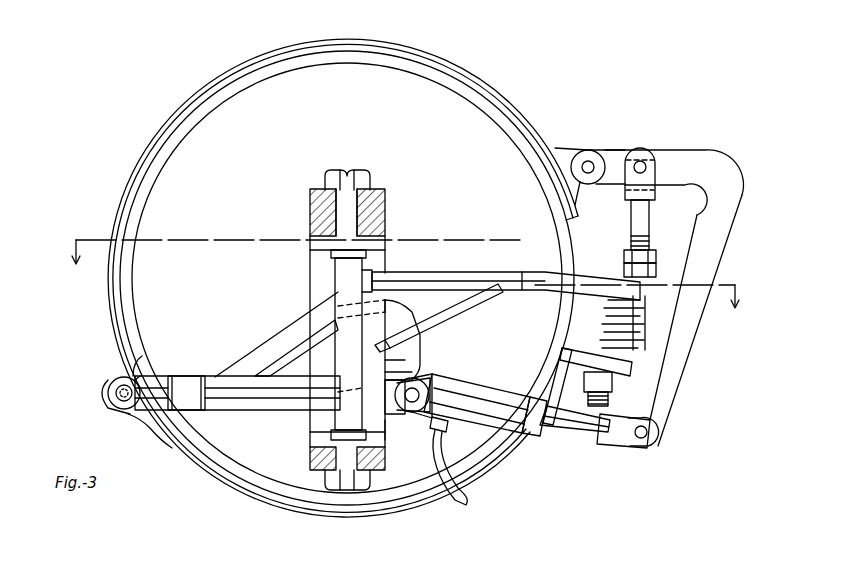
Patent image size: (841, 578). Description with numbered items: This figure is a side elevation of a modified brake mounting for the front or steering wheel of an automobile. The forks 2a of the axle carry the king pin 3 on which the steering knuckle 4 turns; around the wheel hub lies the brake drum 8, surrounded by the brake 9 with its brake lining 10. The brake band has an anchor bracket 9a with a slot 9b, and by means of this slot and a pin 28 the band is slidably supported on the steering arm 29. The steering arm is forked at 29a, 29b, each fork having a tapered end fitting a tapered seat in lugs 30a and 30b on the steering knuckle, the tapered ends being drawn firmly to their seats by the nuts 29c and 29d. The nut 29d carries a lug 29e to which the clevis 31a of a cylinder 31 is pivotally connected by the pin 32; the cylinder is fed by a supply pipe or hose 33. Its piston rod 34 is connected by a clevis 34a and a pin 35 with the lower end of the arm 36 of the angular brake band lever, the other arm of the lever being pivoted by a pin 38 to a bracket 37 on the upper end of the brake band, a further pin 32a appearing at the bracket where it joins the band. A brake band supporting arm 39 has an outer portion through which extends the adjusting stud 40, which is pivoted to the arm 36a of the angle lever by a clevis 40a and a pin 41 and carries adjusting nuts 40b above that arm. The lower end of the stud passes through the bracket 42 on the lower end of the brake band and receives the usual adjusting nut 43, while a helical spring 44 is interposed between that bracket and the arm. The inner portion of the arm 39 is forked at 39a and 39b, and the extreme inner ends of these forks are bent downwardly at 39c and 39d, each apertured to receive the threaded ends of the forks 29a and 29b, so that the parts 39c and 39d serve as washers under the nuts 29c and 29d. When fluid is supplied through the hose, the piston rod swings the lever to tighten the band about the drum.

The forks of the axle 2a is at (386, 205).
The king pin 3 is at (347, 190).
The steering knuckle 4 is at (308, 270).
The brake drum 8 is at (342, 63).
The brake 9 is at (386, 50).
The anchor bracket 9a is at (160, 440).
The slot 9b is at (108, 396).
The brake lining 10 is at (333, 42).
The pin 28 is at (122, 392).
The steering arm 29 is at (216, 376).
The fork of the steering arm 29a is at (290, 332).
The fork of the steering arm 29b is at (270, 405).
The nut 29c is at (393, 333).
The nut 29d is at (392, 425).
The lug 29e is at (418, 380).
The lug 30a is at (362, 282).
The lug 30b is at (312, 376).
The cylinder 31 is at (494, 402).
The clevis 31a is at (434, 384).
The pin 32 is at (420, 396).
The pivot pin 32a is at (590, 162).
The supply pipe or hose 33 is at (470, 502).
The piston rod 34 is at (577, 432).
The clevis 34a is at (648, 440).
The pin 35 is at (648, 431).
The arm of the angular brake band lever 36 is at (683, 336).
The arm of the angle lever 36a is at (688, 150).
The bracket 37 is at (568, 150).
The pin 38 is at (640, 160).
The brake band supporting arm 39 is at (560, 284).
The fork of the supporting arm 39a is at (430, 277).
The fork of the supporting arm 39b is at (472, 277).
The downwardly bent end 39c is at (366, 272).
The downwardly bent end 39d is at (400, 350).
The adjusting stud 40 is at (640, 214).
The clevis 40a is at (658, 178).
The adjusting nuts 40b is at (638, 266).
The pin 41 is at (650, 150).
The bracket 42 is at (622, 362).
The adjusting nut 43 is at (608, 388).
The helical spring 44 is at (622, 318).